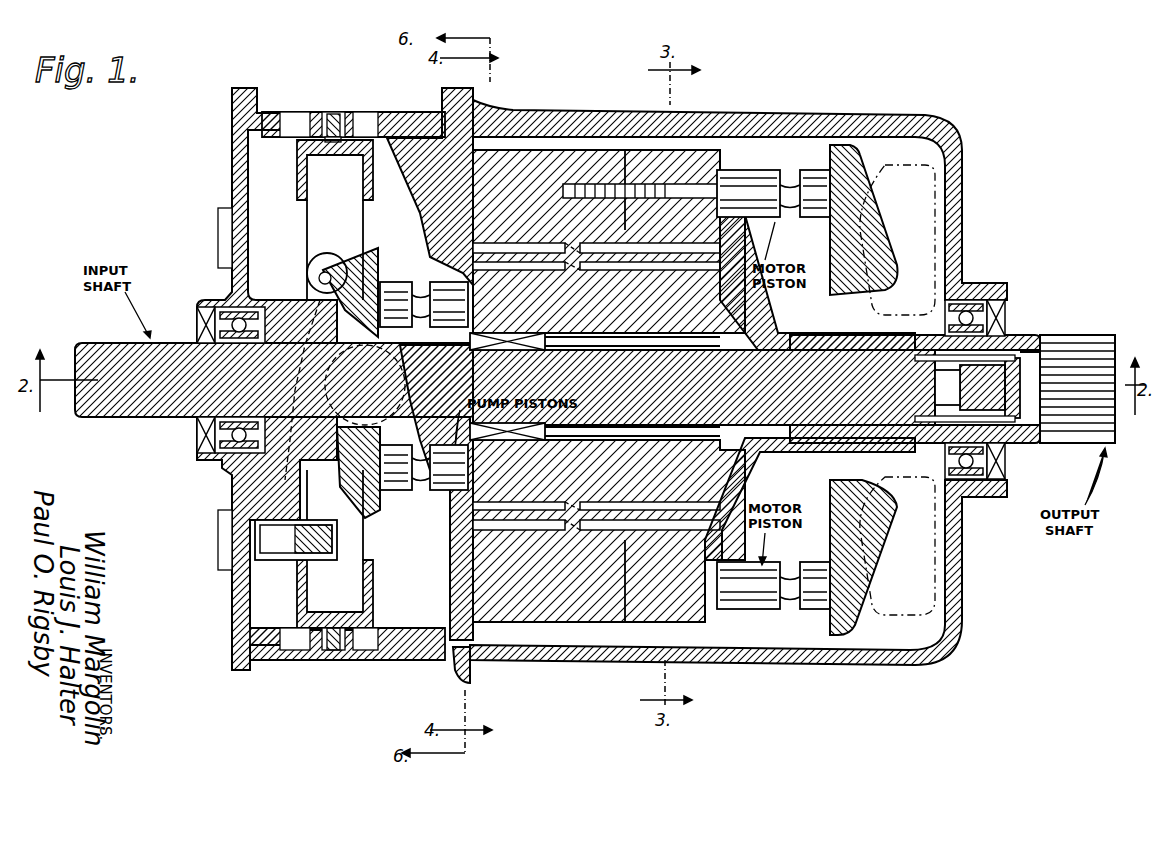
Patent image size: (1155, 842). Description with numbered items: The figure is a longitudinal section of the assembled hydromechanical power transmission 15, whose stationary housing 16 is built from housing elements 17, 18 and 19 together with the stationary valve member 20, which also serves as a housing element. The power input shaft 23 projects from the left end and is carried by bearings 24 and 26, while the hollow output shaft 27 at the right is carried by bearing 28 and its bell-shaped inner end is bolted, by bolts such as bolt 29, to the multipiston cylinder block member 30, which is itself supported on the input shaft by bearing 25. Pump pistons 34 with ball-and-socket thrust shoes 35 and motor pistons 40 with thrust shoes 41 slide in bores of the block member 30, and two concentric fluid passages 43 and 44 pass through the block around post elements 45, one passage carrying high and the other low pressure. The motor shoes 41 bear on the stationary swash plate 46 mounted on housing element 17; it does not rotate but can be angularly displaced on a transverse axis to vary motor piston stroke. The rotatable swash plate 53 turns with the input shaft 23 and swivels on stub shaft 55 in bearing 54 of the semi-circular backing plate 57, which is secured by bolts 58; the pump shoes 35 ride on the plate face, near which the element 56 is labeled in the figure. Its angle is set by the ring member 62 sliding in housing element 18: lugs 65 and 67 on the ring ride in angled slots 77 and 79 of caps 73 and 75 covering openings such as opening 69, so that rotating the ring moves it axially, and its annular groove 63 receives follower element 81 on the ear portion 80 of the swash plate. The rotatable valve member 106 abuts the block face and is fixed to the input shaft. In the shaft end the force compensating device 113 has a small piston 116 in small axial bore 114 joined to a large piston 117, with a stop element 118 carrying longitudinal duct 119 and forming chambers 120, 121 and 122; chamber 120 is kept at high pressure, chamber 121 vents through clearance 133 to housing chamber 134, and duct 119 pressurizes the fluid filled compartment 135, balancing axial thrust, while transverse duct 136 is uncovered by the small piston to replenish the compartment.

The hydromechanical power transmission 15 is at (937, 128).
The stationary housing 16 is at (786, 118).
The housing element 17 is at (705, 118).
The housing element 18 is at (262, 88).
The housing element 19 is at (232, 164).
The stationary valve member 20 is at (442, 90).
The power input shaft 23 is at (101, 343).
The bearing 24 is at (225, 303).
The bearing 25 is at (468, 338).
The bearing 26 is at (1005, 338).
The output shaft 27 is at (738, 232).
The bearing 28 is at (965, 300).
The bolt 29 is at (722, 185).
The multipiston cylinder block member 30 is at (554, 148).
The pump piston 34 is at (418, 505).
The thrust shoe 35 is at (395, 497).
The motor piston 40 is at (738, 200).
The thrust shoe 41 is at (815, 170).
The fluid passage 43 is at (535, 270).
The fluid passage 44 is at (537, 243).
The post element 45 is at (575, 262).
The stationary swash plate 46 is at (870, 165).
The rotatable swash plate 53 is at (378, 250).
The transverse bearing 54 is at (395, 383).
The stub shaft 55 is at (355, 383).
The cam plate edge 56 is at (392, 262).
The backing plate 57 is at (325, 545).
The bolt 58 is at (255, 540).
The ring member 62 is at (290, 605).
The annular groove 63 is at (300, 180).
The projecting lug 65 is at (320, 655).
The projecting lug 67 is at (346, 112).
The opening 69 is at (392, 622).
The cap 73 is at (385, 660).
The cap 75 is at (294, 112).
The slot 77 is at (338, 660).
The slot 79 is at (330, 112).
The ear portion 80 is at (323, 275).
The follower element 81 is at (328, 255).
The rotatable valve member 106 is at (737, 440).
The force compensating device 113 is at (990, 420).
The small axial bore 114 is at (932, 385).
The small piston 116 is at (950, 405).
The large piston 117 is at (985, 370).
The stop element 118 is at (1005, 372).
The longitudinal duct 119 is at (1020, 395).
The chamber 120 is at (890, 165).
The chamber 121 is at (970, 375).
The chamber 122 is at (985, 400).
The clearance 133 is at (558, 350).
The housing chamber 134 is at (232, 598).
The fluid filled compartment 135 is at (1090, 304).
The transverse duct 136 is at (945, 400).